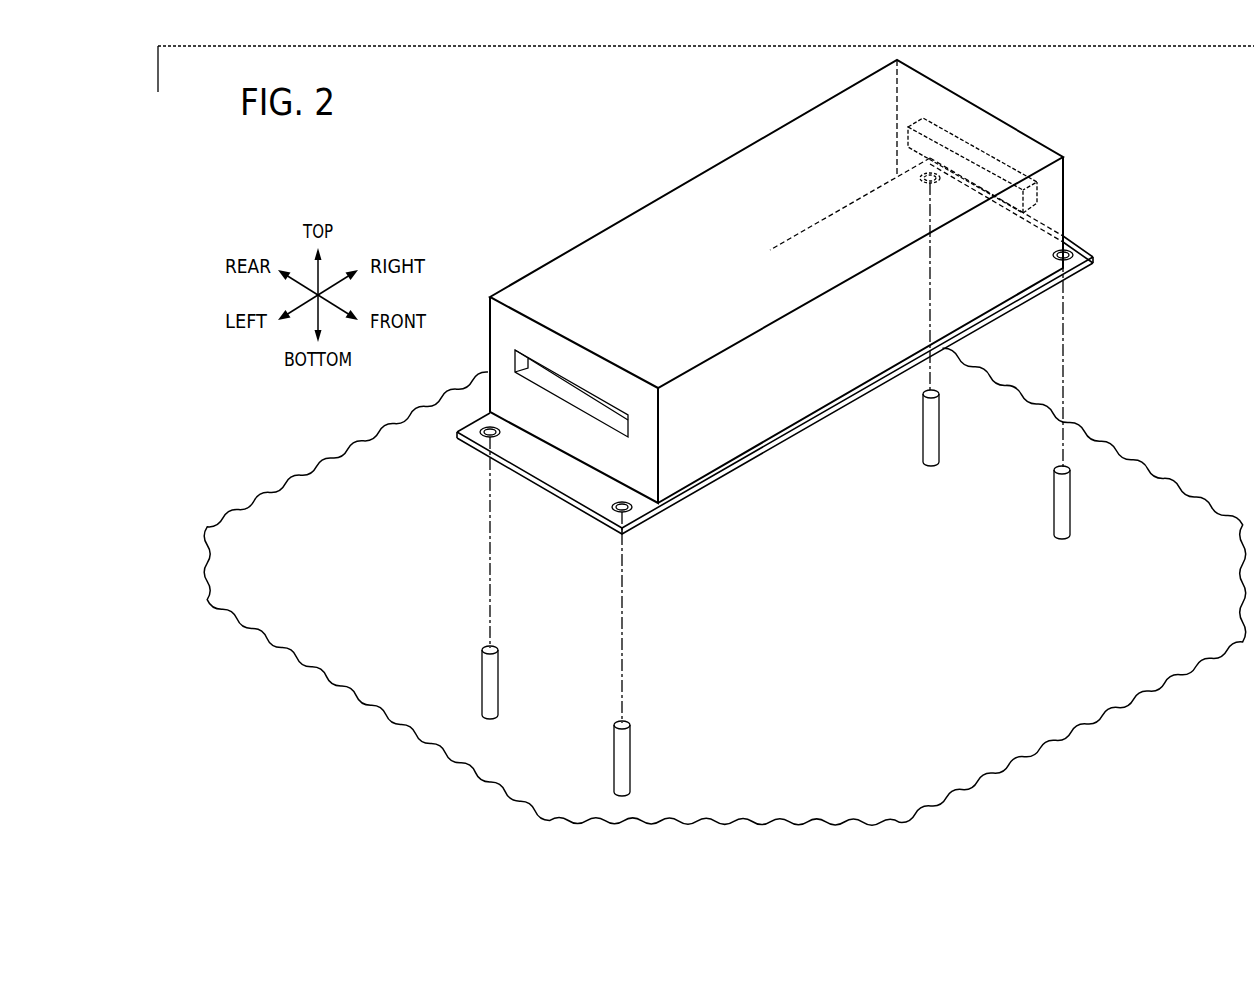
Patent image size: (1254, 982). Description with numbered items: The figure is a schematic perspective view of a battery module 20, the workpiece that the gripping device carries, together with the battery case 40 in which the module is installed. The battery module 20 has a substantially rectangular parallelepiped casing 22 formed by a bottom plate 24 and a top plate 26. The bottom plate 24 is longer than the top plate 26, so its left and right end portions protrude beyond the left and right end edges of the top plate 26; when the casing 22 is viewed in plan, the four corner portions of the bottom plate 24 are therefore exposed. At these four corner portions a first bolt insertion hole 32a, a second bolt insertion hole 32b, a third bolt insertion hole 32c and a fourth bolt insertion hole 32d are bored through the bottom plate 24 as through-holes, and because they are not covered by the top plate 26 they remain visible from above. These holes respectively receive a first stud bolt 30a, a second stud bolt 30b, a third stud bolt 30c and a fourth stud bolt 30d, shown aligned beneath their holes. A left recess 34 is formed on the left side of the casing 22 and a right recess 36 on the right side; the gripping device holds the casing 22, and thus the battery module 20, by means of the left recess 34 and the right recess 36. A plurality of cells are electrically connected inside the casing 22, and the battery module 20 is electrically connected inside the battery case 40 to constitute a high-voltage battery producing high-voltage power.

The battery module 20 is at (787, 321).
The casing 22 is at (787, 370).
The bottom plate 24 is at (597, 497).
The top plate 26 is at (778, 301).
The first stud bolt 30a is at (622, 758).
The second stud bolt 30b is at (490, 680).
The third stud bolt 30c is at (1068, 500).
The fourth stud bolt 30d is at (935, 432).
The first bolt insertion hole 32a is at (630, 512).
The second bolt insertion hole 32b is at (486, 441).
The third bolt insertion hole 32c is at (1066, 250).
The fourth bolt insertion hole 32d is at (920, 189).
The left recess 34 is at (587, 405).
The right recess 36 is at (1010, 176).
The battery case 40 is at (1186, 502).